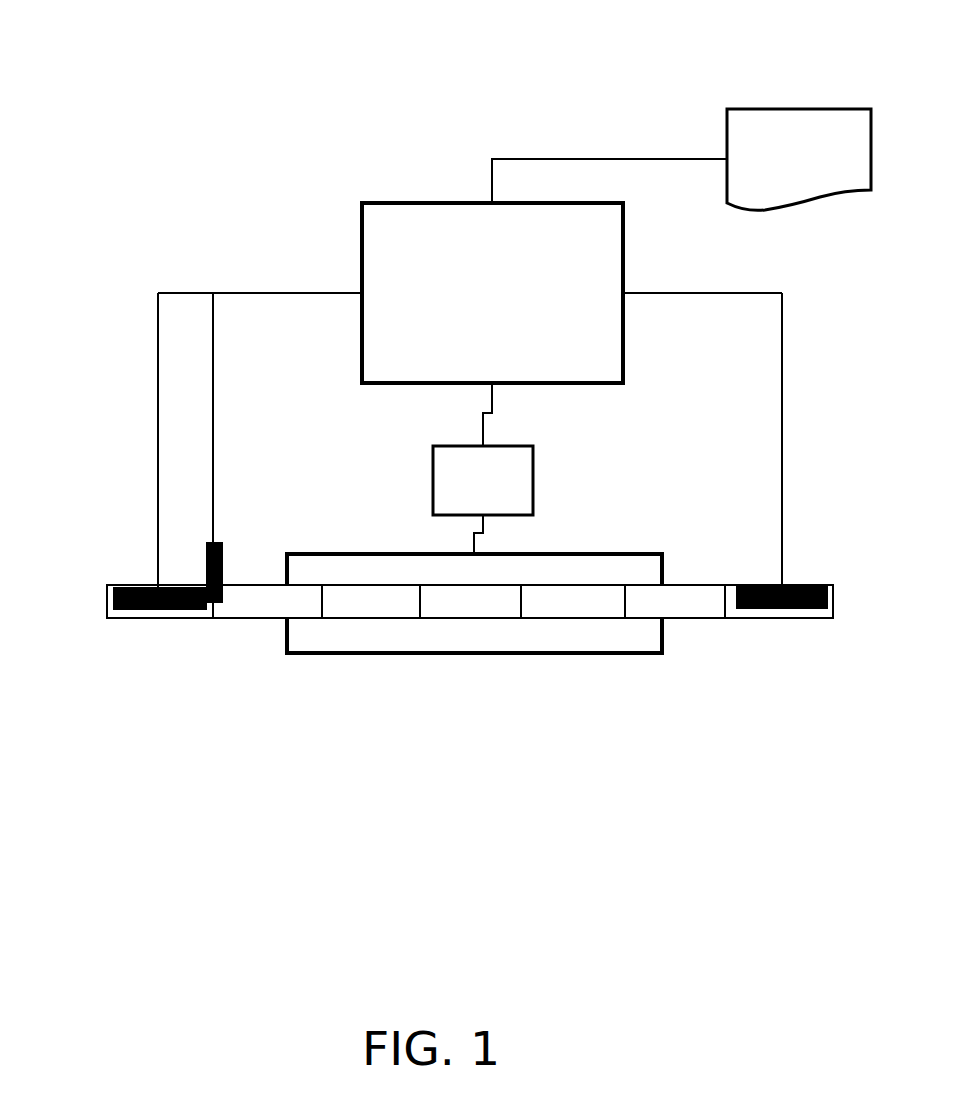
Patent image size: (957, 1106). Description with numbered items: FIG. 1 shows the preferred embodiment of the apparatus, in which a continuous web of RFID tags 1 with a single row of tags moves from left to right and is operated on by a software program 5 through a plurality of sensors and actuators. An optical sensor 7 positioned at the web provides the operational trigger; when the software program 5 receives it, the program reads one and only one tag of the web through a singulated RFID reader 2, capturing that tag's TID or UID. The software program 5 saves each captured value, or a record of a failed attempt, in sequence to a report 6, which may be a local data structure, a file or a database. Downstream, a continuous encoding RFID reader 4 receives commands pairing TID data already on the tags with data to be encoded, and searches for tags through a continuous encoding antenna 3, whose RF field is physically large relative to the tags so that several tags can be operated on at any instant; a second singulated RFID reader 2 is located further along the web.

The continuous web of RFID tags 1 is at (690, 597).
The singulated RFID reader 2 is at (152, 608).
The continuous encoding antenna 3 is at (579, 632).
The continuous encoding RFID reader 4 is at (468, 473).
The software program 5 is at (538, 252).
The report of RFID TID or UID sequence and bad tags 6 is at (813, 143).
The optical sensor 7 is at (220, 577).